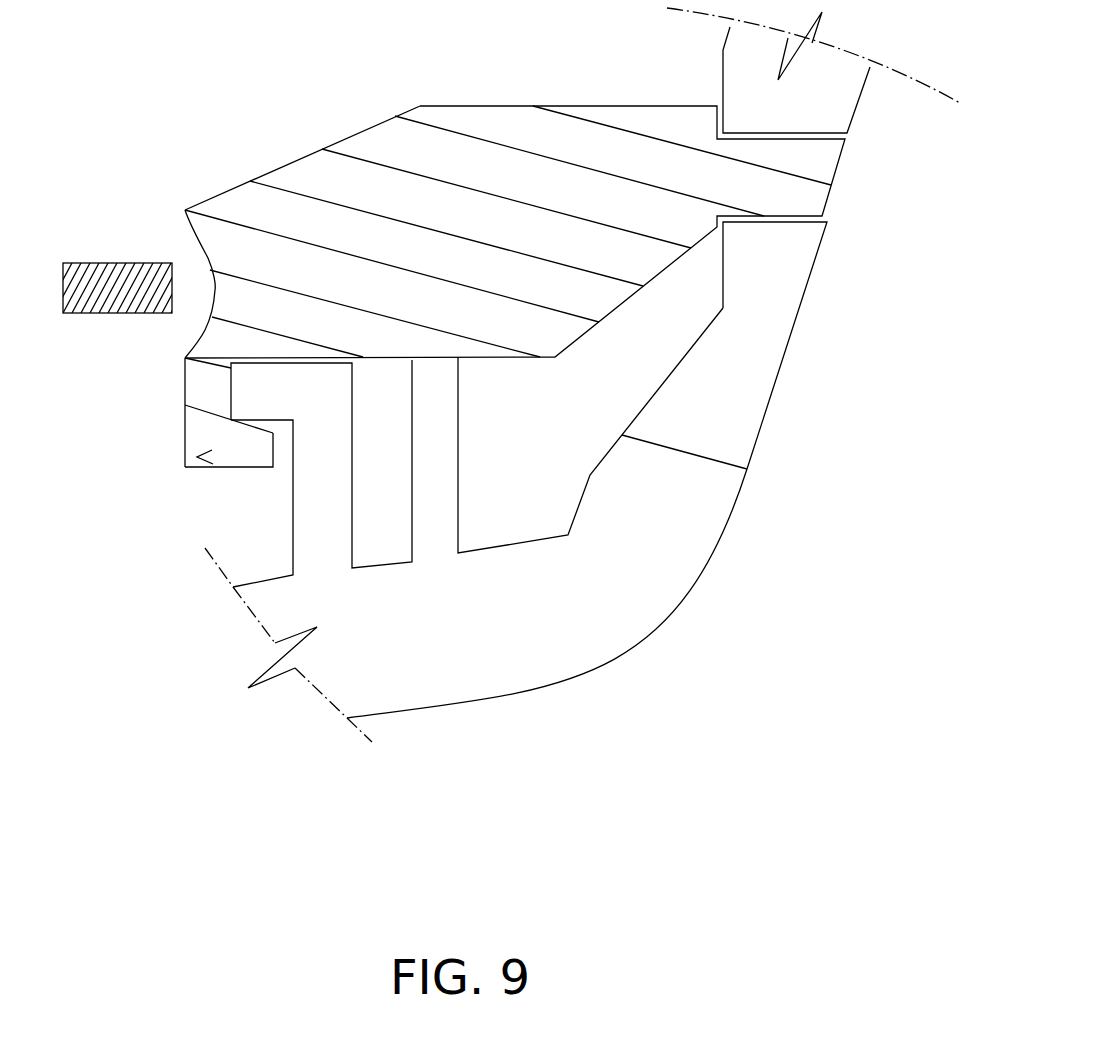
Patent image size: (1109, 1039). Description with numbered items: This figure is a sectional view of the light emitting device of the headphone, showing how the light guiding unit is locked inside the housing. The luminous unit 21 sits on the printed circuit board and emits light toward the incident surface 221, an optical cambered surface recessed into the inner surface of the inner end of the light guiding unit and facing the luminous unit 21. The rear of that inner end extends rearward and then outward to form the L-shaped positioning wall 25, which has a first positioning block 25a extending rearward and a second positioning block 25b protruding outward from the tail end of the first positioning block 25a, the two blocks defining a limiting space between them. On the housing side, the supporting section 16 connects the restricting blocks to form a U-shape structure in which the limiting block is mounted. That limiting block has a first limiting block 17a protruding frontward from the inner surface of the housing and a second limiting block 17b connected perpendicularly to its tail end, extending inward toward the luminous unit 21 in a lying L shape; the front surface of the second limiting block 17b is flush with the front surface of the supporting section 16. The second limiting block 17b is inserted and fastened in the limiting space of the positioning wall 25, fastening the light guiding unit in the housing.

The supporting section 16 is at (451, 451).
The first limiting block 17a is at (347, 538).
The second limiting block 17b is at (322, 400).
The luminous unit 21 is at (127, 268).
The incident surface 221 is at (207, 257).
The positioning wall 25 is at (158, 423).
The first positioning block 25a is at (191, 400).
The second positioning block 25b is at (196, 457).